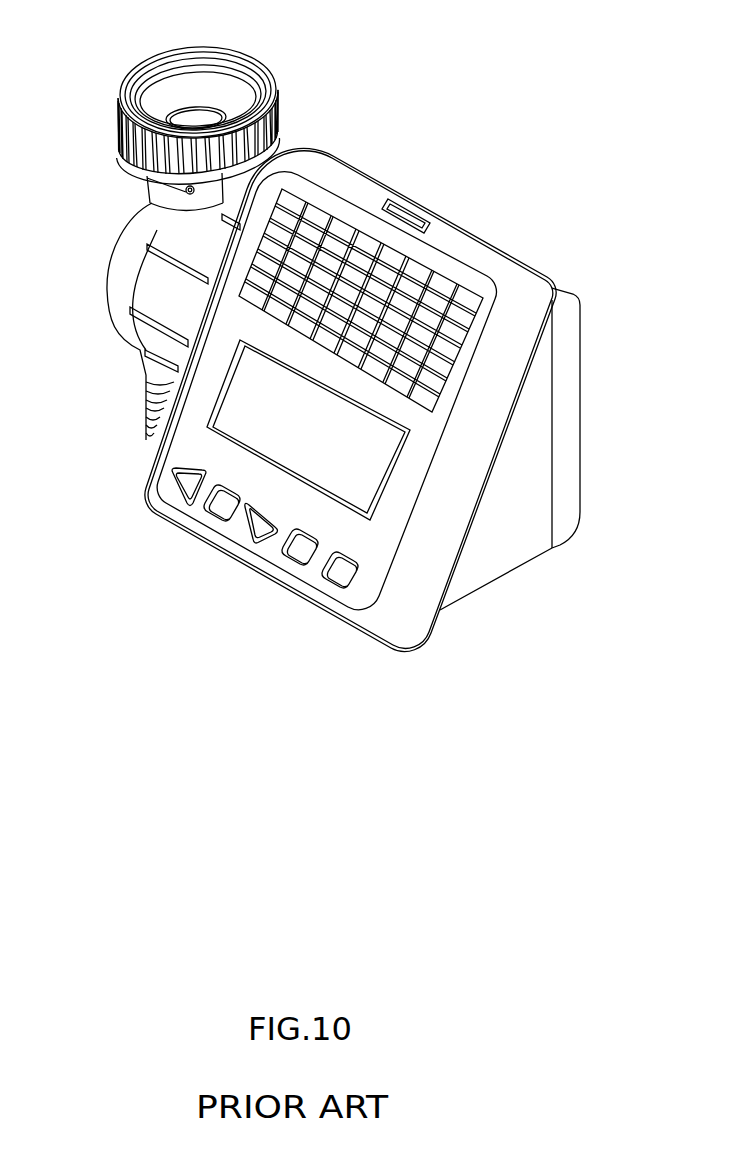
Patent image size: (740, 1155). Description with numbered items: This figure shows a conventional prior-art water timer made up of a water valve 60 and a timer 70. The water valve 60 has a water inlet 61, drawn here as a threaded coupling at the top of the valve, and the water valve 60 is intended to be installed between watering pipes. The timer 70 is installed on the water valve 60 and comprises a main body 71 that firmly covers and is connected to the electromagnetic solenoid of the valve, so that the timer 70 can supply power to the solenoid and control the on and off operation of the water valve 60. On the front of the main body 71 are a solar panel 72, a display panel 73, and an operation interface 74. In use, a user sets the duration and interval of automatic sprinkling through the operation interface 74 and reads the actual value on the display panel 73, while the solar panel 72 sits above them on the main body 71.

The water valve 60 is at (121, 222).
The water inlet 61 is at (198, 117).
The timer 70 is at (510, 587).
The main body 71 is at (543, 438).
The solar panel 72 is at (342, 227).
The display panel 73 is at (253, 409).
The operation interface 74 is at (178, 488).